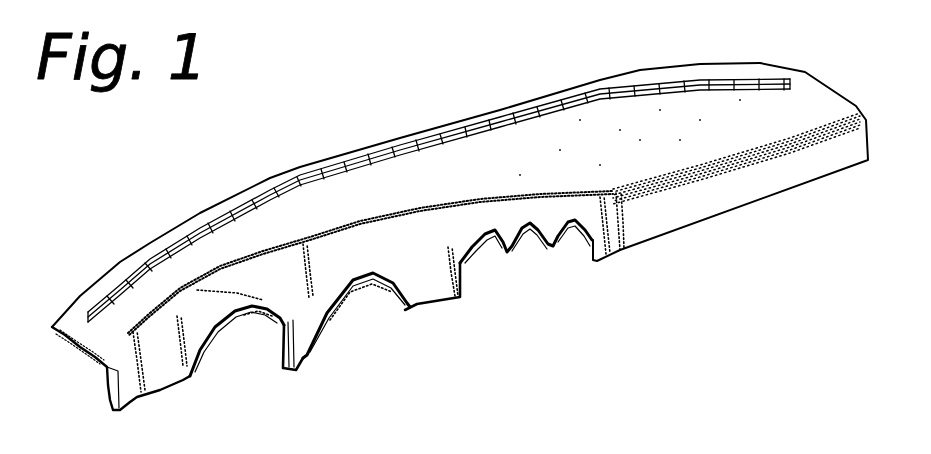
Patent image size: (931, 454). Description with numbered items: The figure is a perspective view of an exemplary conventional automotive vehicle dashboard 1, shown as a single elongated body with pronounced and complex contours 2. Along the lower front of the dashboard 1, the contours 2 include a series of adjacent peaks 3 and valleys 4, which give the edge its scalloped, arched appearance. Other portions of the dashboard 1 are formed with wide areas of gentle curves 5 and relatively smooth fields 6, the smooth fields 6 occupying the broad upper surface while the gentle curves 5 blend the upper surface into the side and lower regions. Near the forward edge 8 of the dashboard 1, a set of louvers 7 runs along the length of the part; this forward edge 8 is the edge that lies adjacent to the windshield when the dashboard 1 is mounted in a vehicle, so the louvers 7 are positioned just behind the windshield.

The vehicle dashboard 1 is at (830, 84).
The contours 2 is at (251, 254).
The peaks 3 is at (207, 307).
The valleys 4 is at (293, 315).
The gentle curves 5 is at (622, 207).
The smooth fields 6 is at (585, 137).
The louvers 7 is at (377, 152).
The forward edge 8 is at (484, 107).